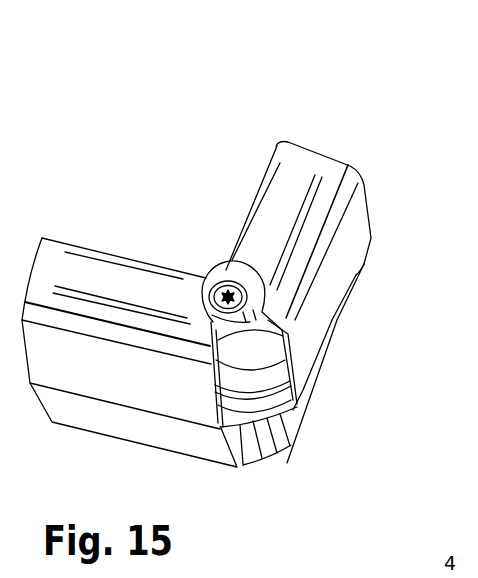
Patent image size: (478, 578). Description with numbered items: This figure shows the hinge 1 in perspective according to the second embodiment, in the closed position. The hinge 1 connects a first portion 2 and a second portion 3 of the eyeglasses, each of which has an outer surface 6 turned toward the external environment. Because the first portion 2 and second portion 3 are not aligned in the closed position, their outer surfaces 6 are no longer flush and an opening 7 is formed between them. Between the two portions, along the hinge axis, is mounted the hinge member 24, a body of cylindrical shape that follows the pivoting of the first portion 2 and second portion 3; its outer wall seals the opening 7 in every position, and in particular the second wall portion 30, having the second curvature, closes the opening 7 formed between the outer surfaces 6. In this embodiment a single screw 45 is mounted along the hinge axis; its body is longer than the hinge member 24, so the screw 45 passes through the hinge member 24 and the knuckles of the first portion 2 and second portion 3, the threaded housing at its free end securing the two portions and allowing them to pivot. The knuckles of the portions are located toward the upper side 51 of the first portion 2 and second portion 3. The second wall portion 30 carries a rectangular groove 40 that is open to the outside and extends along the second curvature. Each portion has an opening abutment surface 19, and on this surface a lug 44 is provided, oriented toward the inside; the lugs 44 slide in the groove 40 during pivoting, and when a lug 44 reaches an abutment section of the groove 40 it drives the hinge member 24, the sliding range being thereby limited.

The hinge 1 is at (146, 144).
The first portion 2 is at (334, 159).
The second portion 3 is at (43, 239).
The outer surface 6 is at (364, 211).
The opening 7 is at (223, 261).
The opening abutment surface 19 is at (266, 323).
The hinge member 24 is at (212, 381).
The second wall portion 30 is at (265, 463).
The groove 40 is at (291, 446).
The lug 44 is at (288, 366).
The screw 45 is at (226, 289).
The upper side 51 is at (114, 263).